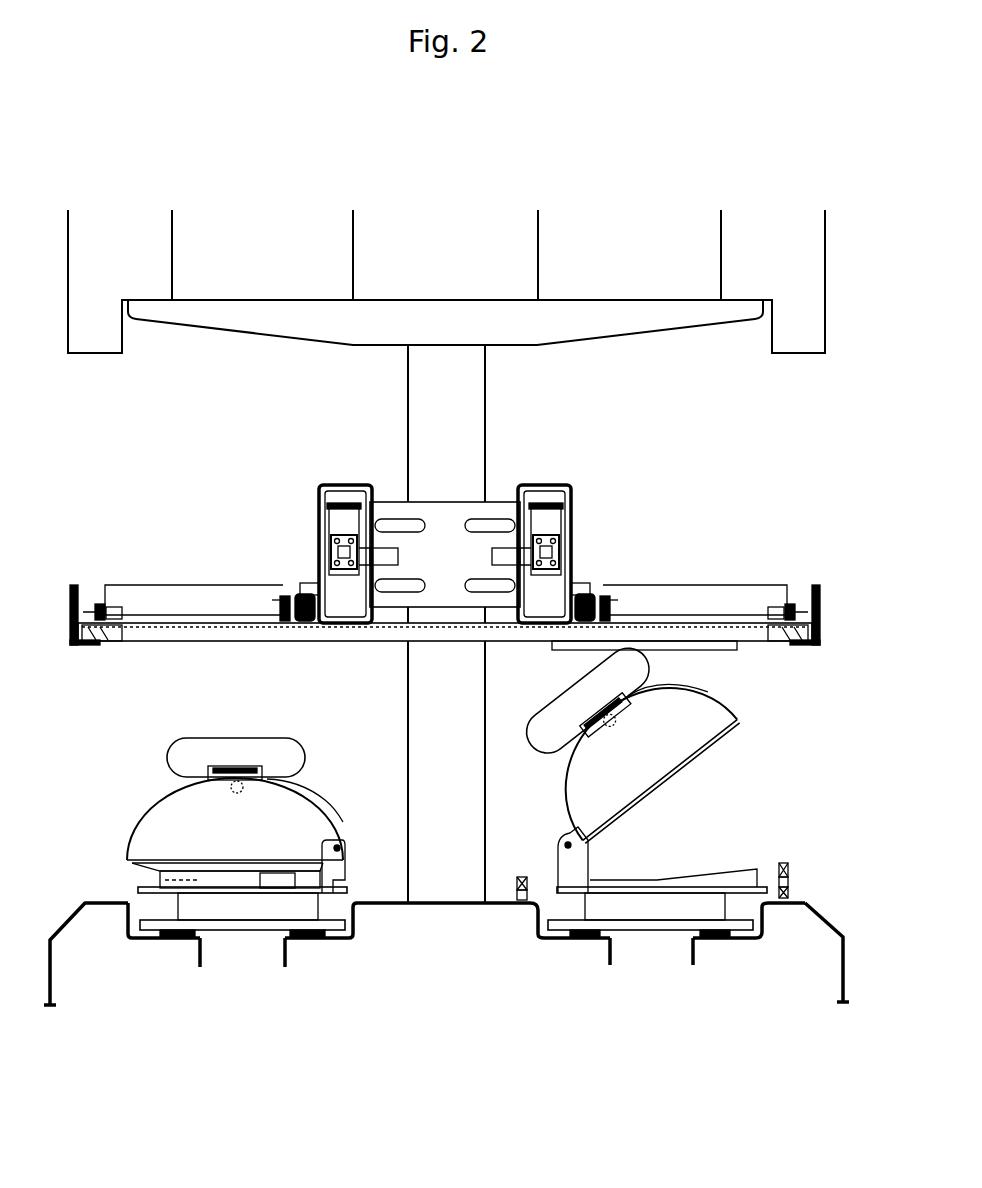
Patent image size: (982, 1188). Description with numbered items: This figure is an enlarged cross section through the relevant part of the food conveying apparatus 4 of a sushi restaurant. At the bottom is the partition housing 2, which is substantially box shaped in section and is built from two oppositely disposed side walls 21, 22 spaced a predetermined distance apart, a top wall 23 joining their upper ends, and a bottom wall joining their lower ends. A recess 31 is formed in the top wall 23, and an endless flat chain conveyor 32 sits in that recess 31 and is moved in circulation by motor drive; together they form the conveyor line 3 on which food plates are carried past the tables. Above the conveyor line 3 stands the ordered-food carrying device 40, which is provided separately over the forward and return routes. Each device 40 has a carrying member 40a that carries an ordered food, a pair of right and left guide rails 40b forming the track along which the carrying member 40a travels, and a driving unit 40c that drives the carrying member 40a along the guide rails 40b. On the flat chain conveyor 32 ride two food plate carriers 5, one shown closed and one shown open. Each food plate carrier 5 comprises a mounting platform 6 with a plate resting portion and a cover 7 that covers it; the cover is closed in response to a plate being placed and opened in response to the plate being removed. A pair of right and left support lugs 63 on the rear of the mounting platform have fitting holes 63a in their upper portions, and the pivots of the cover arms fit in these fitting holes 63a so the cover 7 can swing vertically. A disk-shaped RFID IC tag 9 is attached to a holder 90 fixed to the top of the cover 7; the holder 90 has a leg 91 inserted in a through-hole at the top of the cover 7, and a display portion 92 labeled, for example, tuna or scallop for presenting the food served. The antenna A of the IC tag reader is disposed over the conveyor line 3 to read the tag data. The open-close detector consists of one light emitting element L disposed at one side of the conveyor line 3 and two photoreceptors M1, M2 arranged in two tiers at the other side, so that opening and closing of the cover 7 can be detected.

The partition housing 2 is at (452, 898).
The conveyor line 3 is at (241, 935).
The food conveying apparatus 4 is at (271, 960).
The food plate carrier 5 is at (427, 760).
The mounting platform 6 is at (145, 887).
The cover 7 is at (146, 830).
The IC tag 9 is at (315, 803).
The side wall 21 is at (62, 1000).
The side wall 22 is at (840, 985).
The top wall 23 is at (112, 907).
The recess 31 is at (150, 940).
The flat chain conveyor 32 is at (214, 926).
The ordered-food carrying device 40 is at (443, 518).
The carrying member 40a is at (202, 584).
The guide rails 40b is at (75, 584).
The driving unit 40c is at (348, 520).
The support lugs 63 is at (456, 905).
The fitting holes 63a is at (341, 849).
The holder 90 is at (424, 721).
The leg 91 is at (624, 713).
The display portion 92 is at (305, 749).
The antenna A is at (728, 650).
The light emitting element L is at (508, 899).
The photoreceptor M1 is at (789, 867).
The photoreceptor M2 is at (789, 892).